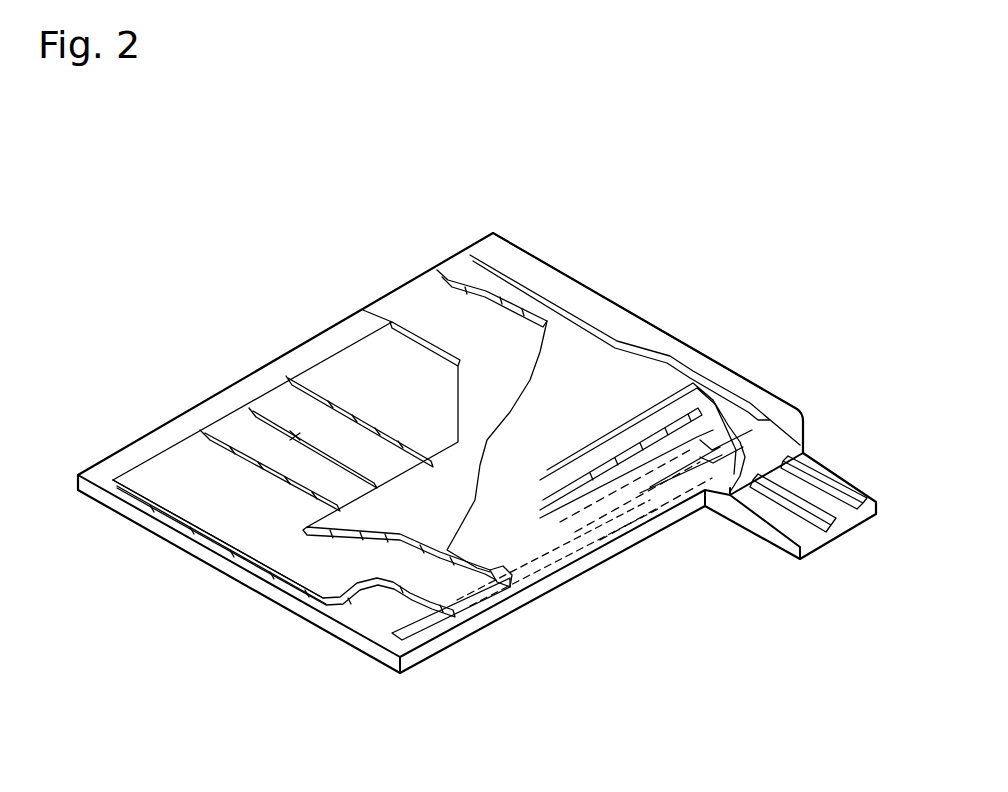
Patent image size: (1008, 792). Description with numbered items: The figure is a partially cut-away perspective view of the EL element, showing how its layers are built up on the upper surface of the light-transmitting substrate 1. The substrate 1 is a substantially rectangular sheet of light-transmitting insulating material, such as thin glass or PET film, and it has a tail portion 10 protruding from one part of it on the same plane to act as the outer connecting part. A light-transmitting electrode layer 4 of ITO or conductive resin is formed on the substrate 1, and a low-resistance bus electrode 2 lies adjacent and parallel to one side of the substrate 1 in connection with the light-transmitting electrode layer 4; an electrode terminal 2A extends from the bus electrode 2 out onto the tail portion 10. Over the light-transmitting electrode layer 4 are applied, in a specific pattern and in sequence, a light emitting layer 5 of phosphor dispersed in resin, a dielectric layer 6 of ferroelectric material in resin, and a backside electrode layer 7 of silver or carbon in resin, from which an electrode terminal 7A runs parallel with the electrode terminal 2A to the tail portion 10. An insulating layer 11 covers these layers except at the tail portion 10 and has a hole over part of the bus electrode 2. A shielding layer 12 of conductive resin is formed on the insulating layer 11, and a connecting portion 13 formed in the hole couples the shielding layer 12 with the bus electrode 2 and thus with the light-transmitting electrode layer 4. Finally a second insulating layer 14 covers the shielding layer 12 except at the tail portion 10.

The light-transmitting substrate 1 is at (118, 457).
The bus electrode 2 is at (392, 631).
The electrode terminal 2A is at (784, 507).
The light-transmitting electrode layer 4 is at (183, 467).
The light emitting layer 5 is at (235, 430).
The dielectric layer 6 is at (290, 405).
The backside electrode layer 7 is at (370, 372).
The electrode terminal 7A is at (857, 507).
The tail portion 10 is at (823, 477).
The insulating layer 11 is at (425, 302).
The shielding layer 12 is at (563, 337).
The connecting portion 13 is at (503, 580).
The second insulating layer 14 is at (520, 259).